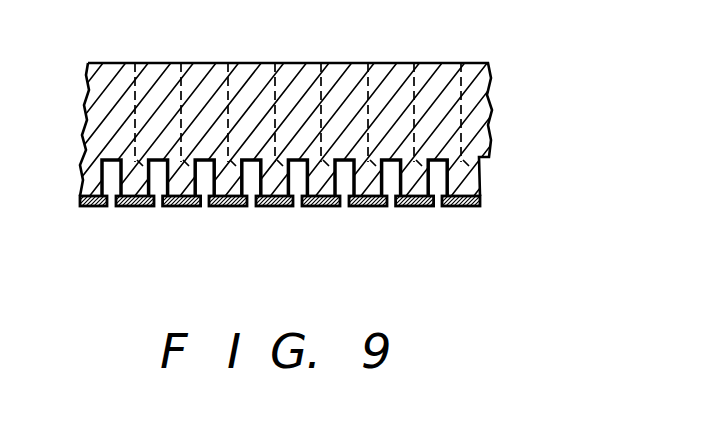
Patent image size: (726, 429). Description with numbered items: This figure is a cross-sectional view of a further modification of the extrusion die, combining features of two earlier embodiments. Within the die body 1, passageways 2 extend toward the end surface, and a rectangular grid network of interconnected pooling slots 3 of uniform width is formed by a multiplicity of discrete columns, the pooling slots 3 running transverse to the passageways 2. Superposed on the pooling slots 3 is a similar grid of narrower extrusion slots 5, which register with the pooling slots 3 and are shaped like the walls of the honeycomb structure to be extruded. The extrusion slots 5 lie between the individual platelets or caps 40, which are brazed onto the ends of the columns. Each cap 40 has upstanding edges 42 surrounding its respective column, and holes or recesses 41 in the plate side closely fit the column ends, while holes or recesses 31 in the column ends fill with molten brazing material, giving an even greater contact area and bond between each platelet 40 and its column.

The die body 1 is at (495, 141).
The passageways 2 is at (432, 60).
The pooling slots 3 is at (436, 182).
The extrusion slots 5 is at (390, 206).
The holes or recesses 31 is at (320, 206).
The platelets 40 is at (203, 206).
The holes or recesses 41 is at (253, 206).
The upstanding edges 42 is at (157, 206).